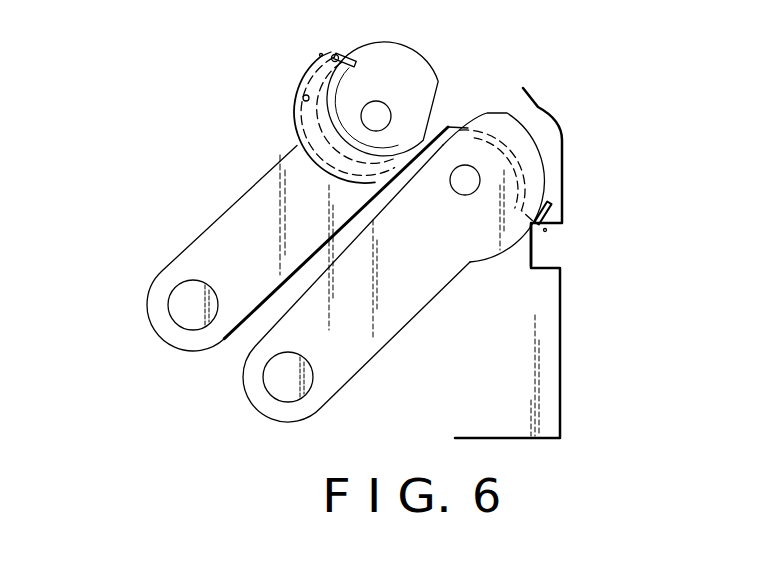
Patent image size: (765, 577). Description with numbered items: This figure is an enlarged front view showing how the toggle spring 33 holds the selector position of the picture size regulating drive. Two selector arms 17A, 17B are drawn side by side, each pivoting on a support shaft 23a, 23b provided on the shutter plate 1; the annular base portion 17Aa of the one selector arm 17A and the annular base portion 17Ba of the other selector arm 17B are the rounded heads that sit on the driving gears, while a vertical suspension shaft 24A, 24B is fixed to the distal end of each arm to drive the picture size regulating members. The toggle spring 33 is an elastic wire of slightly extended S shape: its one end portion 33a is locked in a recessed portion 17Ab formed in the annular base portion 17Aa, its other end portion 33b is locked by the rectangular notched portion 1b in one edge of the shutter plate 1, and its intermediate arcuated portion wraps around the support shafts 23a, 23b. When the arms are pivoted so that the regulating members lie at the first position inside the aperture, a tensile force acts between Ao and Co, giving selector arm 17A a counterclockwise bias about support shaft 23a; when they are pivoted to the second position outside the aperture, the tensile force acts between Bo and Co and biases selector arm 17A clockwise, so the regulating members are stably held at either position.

The shutter plate 1 is at (552, 368).
The notched portion 1b is at (533, 255).
The selector arm 17A is at (237, 218).
The annular base portion 17Aa is at (415, 58).
The recessed portion 17Ab is at (337, 56).
The selector arm 17B is at (400, 313).
The annular base portion 17Ba is at (528, 147).
The support shaft 23a is at (385, 116).
The support shaft 23b is at (465, 182).
The vertical suspension shaft 24A is at (187, 298).
The vertical suspension shaft 24B is at (270, 377).
The toggle spring 33 is at (458, 124).
The one end portion 33a is at (357, 63).
The other end portion 33b is at (552, 202).
The point A0 Ao is at (299, 97).
The point B0 Bo is at (318, 52).
The point C0 Co is at (549, 231).